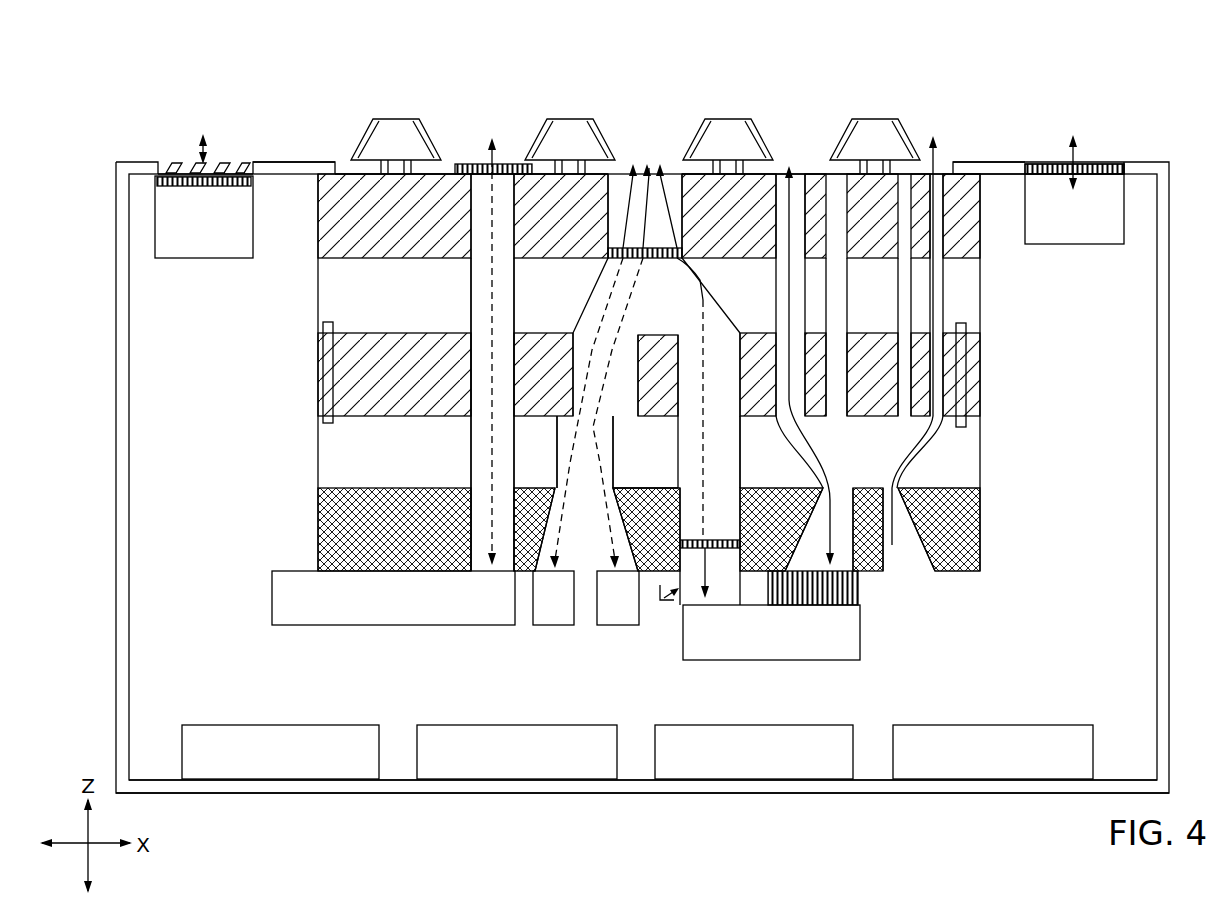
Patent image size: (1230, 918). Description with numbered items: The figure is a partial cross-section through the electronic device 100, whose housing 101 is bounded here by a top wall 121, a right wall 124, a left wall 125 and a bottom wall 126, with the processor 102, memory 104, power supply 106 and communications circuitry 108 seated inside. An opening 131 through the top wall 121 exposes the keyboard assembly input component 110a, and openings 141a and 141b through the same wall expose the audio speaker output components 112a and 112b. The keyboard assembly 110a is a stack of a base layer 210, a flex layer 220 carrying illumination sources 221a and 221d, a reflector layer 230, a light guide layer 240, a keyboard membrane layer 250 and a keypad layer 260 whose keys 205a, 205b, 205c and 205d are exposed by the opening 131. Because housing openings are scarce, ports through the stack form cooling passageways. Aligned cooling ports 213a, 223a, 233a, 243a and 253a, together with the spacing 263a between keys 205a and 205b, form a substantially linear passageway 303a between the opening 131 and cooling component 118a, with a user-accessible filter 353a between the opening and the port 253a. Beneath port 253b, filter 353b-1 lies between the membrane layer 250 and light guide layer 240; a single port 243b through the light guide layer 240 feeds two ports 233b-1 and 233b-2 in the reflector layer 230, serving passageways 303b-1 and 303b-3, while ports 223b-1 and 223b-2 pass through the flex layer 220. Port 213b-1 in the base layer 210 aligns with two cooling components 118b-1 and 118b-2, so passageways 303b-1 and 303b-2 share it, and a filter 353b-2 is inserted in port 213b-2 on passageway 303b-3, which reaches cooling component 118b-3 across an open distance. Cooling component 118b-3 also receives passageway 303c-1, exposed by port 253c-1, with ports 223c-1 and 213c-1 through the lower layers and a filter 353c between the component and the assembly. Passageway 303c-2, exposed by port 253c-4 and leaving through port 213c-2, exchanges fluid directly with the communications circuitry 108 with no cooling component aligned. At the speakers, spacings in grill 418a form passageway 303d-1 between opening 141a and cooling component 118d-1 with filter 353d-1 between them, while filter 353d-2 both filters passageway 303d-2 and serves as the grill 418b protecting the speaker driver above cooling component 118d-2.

The electronic device 100 is at (688, 851).
The housing 101 is at (639, 795).
The processor 102 is at (280, 752).
The memory 104 is at (517, 752).
The power supply 106 is at (754, 752).
The communications circuitry 108 is at (993, 752).
The keyboard assembly input component 110a is at (658, 66).
The audio speaker output component 112a is at (199, 88).
The audio speaker output component 112b is at (1134, 122).
The cooling component 118a is at (393, 598).
The cooling component 118b-1 is at (552, 625).
The cooling component 118b-2 is at (627, 625).
The cooling component 118b-3 is at (760, 622).
The cooling component 118d-1 is at (204, 217).
The cooling component 118d-2 is at (1074, 209).
The top wall 121 is at (133, 163).
The right wall 124 is at (1169, 447).
The left wall 125 is at (129, 460).
The bottom wall 126 is at (590, 785).
The opening 131 is at (345, 172).
The opening 141a is at (133, 163).
The opening 141b is at (1032, 163).
The key 205a is at (396, 118).
The key 205b is at (571, 118).
The key 205c is at (730, 118).
The key 205d is at (876, 118).
The base layer 210 is at (313, 492).
The flex layer 220 is at (313, 420).
The reflector layer 230 is at (313, 337).
The light guide layer 240 is at (313, 262).
The keyboard membrane layer 250 is at (313, 178).
The keypad layer 260 is at (351, 138).
The cooling port 213a is at (491, 529).
The cooling port 213b-1 is at (586, 529).
The cooling port 213b-2 is at (712, 546).
The cooling port 213c-1 is at (823, 529).
The cooling port 213c-2 is at (938, 708).
The illumination source 221a is at (323, 330).
The illumination source 221d is at (966, 332).
The cooling port 223a is at (491, 452).
The cooling port 223b-1 is at (585, 452).
The cooling port 223b-2 is at (711, 452).
The cooling port 223c-1 is at (859, 452).
The cooling port 233a is at (491, 374).
The cooling port 233b-1 is at (606, 374).
The cooling port 233b-2 is at (710, 374).
The cooling port 243a is at (491, 295).
The cooling port 243b is at (653, 363).
The cooling port 253a is at (491, 372).
The cooling port 253b is at (656, 253).
The cooling port 253c-1 is at (797, 185).
The cooling port 253c-4 is at (942, 178).
The spacing 263a is at (490, 150).
The cooling passageway 303a is at (492, 140).
The cooling passageway 303b-1 is at (634, 162).
The cooling passageway 303b-2 is at (647, 160).
The cooling passageway 303b-3 is at (661, 160).
The cooling passageway 303c-1 is at (789, 165).
The cooling passageway 303c-2 is at (933, 135).
The cooling passageway 303d-1 is at (205, 136).
The cooling passageway 303d-2 is at (1075, 135).
The filter 353a is at (512, 164).
The filter 353b-1 is at (655, 258).
The filter 353b-2 is at (722, 550).
The filter 353c is at (858, 590).
The filter 353d-1 is at (168, 190).
The filter 353d-2 is at (1100, 163).
The grill 418a is at (164, 163).
The grill 418b is at (1074, 169).